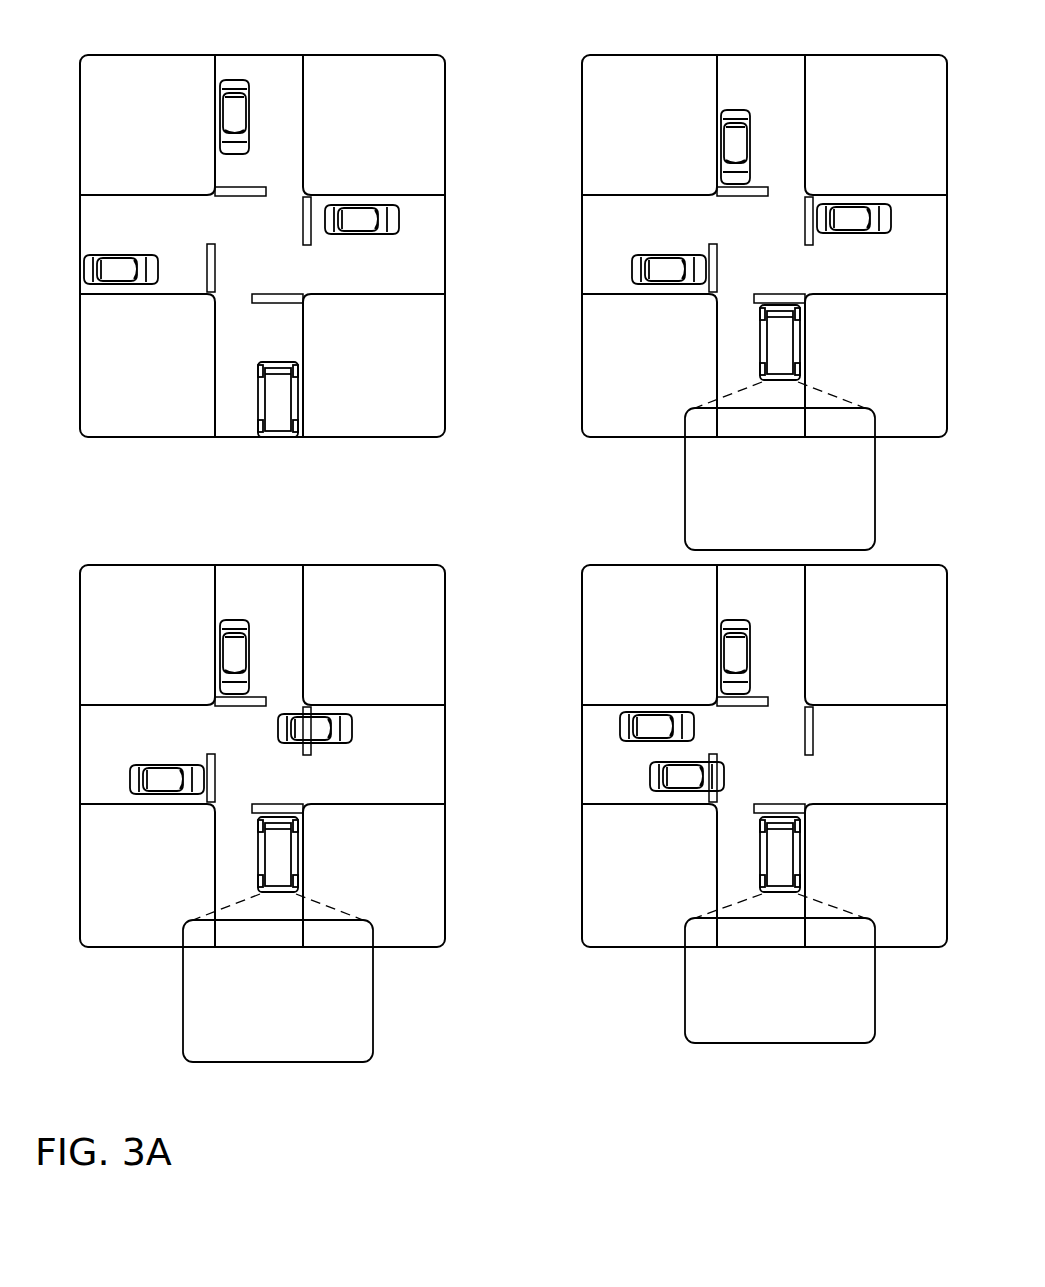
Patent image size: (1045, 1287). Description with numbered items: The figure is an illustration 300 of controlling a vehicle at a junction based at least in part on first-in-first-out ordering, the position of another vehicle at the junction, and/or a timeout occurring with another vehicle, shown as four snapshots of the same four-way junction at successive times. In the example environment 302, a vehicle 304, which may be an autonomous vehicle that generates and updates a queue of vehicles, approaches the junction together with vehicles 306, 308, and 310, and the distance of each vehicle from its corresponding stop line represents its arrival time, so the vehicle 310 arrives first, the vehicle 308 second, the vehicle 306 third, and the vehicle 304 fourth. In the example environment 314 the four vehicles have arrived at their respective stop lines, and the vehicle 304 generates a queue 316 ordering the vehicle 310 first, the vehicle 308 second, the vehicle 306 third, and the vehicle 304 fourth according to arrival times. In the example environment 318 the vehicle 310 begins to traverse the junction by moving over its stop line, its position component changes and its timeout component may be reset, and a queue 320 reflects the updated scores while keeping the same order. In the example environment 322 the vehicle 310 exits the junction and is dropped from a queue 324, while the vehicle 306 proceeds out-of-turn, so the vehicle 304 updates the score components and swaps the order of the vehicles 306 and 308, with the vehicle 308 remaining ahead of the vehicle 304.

The illustration 300 is at (136, 27).
The example environment 302 is at (80, 128).
The vehicle 304 is at (282, 388).
The vehicle 306 is at (118, 272).
The vehicle 308 is at (230, 113).
The vehicle 310 is at (362, 218).
The example environment 314 is at (582, 128).
The queue 316 is at (823, 441).
The example environment 318 is at (80, 638).
The queue 320 is at (323, 951).
The example environment 322 is at (582, 638).
The queue 324 is at (823, 951).